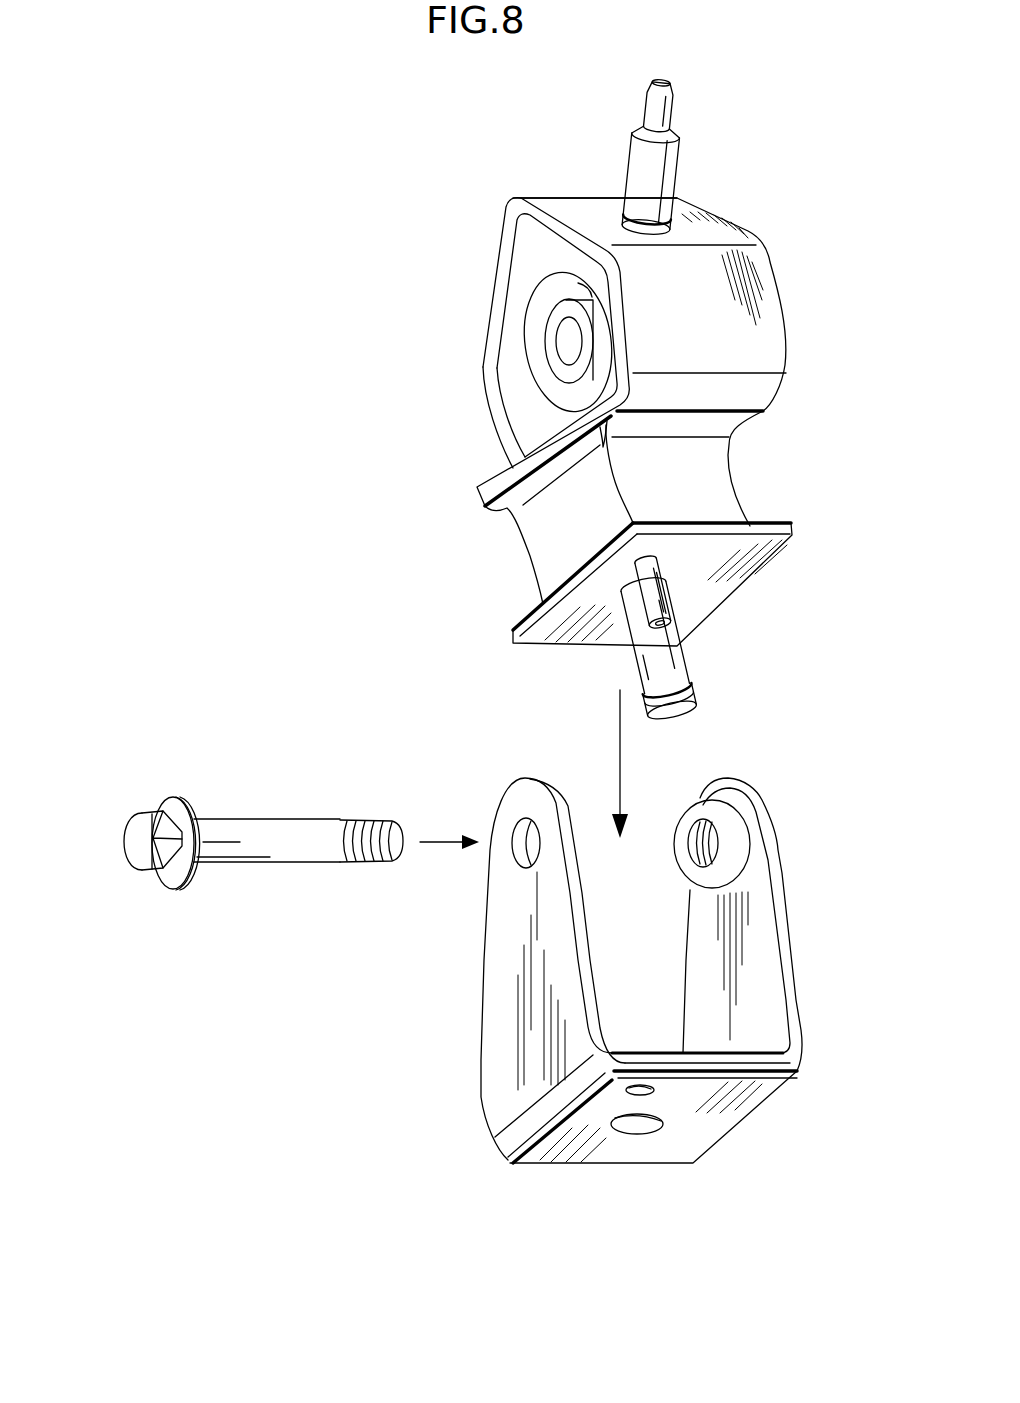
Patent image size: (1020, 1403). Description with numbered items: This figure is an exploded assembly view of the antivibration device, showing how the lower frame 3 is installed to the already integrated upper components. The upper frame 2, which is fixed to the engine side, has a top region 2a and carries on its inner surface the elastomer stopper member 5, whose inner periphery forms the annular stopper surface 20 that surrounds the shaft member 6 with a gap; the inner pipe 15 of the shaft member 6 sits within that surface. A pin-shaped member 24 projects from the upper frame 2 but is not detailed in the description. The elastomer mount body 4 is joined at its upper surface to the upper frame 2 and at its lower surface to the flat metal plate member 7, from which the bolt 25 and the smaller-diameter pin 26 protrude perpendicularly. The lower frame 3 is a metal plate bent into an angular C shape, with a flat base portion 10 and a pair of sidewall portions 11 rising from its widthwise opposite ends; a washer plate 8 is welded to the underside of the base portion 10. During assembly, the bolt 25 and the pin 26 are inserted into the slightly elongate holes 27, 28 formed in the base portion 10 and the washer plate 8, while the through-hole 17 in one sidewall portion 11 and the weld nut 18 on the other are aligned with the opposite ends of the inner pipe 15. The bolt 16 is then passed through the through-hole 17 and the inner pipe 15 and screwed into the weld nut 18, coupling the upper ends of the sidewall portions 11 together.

The upper frame 2 is at (790, 265).
The top surface of mount body 2a is at (590, 205).
The lower frame 3 is at (638, 992).
The mount body 4 is at (727, 467).
The stopper member 5 is at (540, 250).
The shaft member 6 is at (233, 821).
The plate member 7 is at (788, 531).
The washer plate 8 is at (732, 1114).
The base portion 10 is at (753, 1058).
The sidewall portions 11 is at (495, 944).
The inner pipe 15 is at (603, 340).
The bolt 16 is at (137, 847).
The through-hole 17 is at (520, 830).
The weld nut 18 is at (745, 838).
The annular stopper surface 20 is at (600, 298).
The positioning pin 24 is at (668, 168).
The bolt 25 is at (670, 663).
The pin 26 is at (678, 603).
The hole 27 is at (636, 1126).
The hole 28 is at (646, 1085).